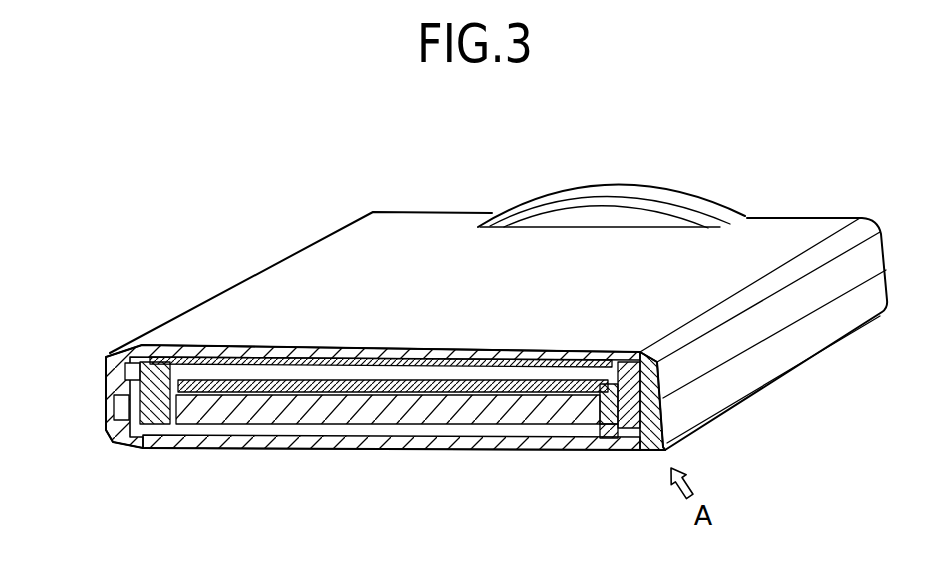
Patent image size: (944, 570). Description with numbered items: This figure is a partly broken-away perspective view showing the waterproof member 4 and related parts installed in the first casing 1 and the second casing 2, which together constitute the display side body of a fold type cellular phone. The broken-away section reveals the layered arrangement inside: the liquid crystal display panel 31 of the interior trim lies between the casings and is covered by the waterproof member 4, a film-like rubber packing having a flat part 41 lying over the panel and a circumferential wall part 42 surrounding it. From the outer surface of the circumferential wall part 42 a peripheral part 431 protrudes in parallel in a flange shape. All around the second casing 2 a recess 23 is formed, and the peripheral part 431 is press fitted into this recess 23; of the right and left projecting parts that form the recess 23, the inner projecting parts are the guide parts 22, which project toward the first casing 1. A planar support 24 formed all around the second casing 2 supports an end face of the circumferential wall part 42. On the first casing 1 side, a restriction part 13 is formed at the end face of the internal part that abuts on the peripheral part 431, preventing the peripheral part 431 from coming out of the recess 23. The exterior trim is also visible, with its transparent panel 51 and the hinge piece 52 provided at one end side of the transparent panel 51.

The first casing 1 is at (327, 258).
The second casing 2 is at (817, 342).
The waterproof member 4 is at (250, 347).
The restriction part 13 is at (625, 390).
The guide parts 22 is at (160, 450).
The recess 23 is at (652, 443).
The planar support 24 is at (620, 443).
The liquid crystal display panel 31 is at (415, 410).
The flat part 41 is at (442, 358).
The circumferential wall part 42 is at (123, 375).
The peripheral part 431 is at (111, 417).
The transparent panel 51 is at (322, 445).
The hinge piece 52 is at (167, 347).